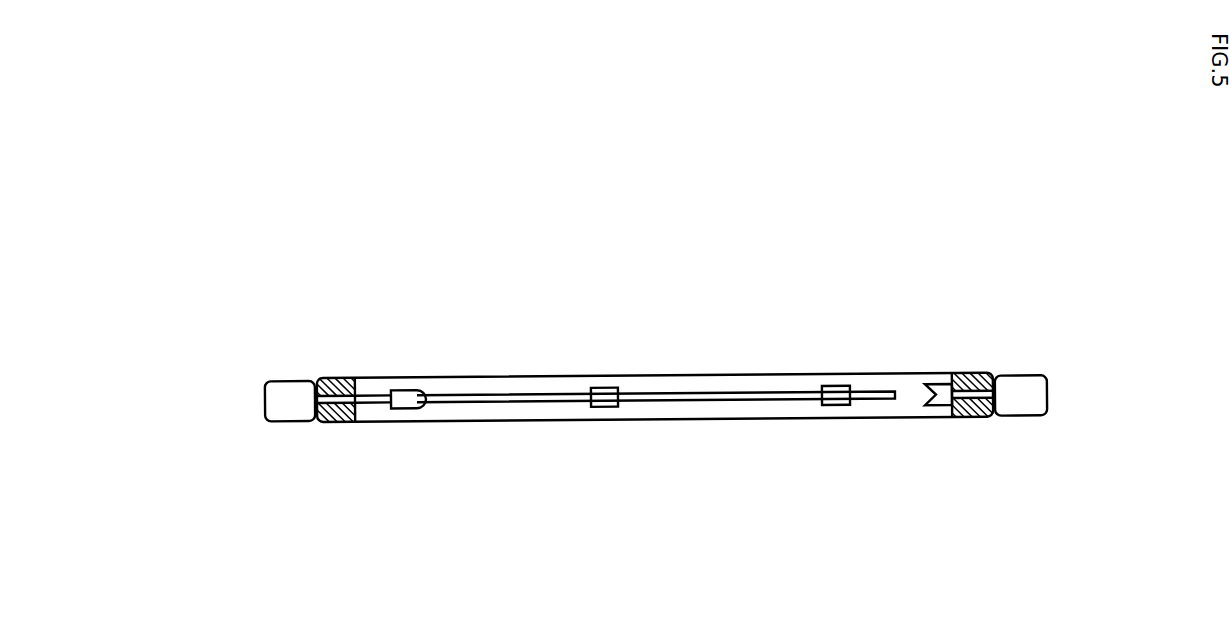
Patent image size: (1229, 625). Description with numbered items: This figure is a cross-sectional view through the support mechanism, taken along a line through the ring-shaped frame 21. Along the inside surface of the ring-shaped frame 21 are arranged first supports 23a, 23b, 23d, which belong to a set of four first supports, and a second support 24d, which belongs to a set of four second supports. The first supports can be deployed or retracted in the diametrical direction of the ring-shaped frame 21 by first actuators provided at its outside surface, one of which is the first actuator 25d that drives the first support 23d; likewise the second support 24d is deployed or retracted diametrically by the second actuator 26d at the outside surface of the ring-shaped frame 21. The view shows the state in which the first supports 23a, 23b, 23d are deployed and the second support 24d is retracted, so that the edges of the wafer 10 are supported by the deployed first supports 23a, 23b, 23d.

The wafer 10 is at (740, 403).
The ring-shaped frame 21 is at (910, 418).
The first support 23a is at (610, 388).
The first support 23b is at (840, 386).
The first support 23d is at (407, 389).
The second support 24d is at (940, 384).
The first actuator 25d is at (270, 400).
The second actuator 26d is at (1047, 396).